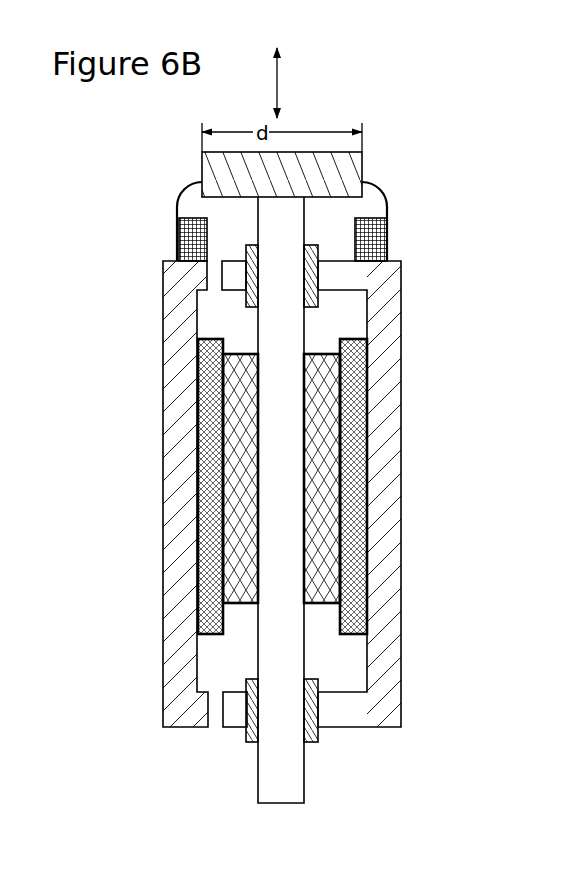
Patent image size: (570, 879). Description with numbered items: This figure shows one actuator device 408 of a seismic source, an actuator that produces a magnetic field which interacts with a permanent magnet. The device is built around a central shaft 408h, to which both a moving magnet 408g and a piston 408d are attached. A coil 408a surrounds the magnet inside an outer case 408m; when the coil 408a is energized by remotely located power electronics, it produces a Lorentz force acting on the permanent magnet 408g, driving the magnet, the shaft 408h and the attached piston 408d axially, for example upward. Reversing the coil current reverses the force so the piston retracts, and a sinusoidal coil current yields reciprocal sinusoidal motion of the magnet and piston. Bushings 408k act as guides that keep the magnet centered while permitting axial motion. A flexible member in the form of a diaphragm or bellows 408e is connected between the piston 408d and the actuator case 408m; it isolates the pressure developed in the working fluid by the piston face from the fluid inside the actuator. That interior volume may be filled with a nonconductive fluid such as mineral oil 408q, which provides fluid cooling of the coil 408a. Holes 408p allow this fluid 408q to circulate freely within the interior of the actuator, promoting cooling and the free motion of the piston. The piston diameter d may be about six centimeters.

The actuator device 408 is at (117, 158).
The coil 408a is at (367, 357).
The piston 408d is at (362, 157).
The diaphragm or bellows 408e is at (383, 195).
The moving magnet 408g is at (320, 604).
The shaft 408h is at (258, 768).
The bushings 408k is at (318, 738).
The outer case 408m is at (163, 680).
The holes 408p is at (215, 275).
The nonconductive fluid (mineral oil) 408q is at (347, 309).